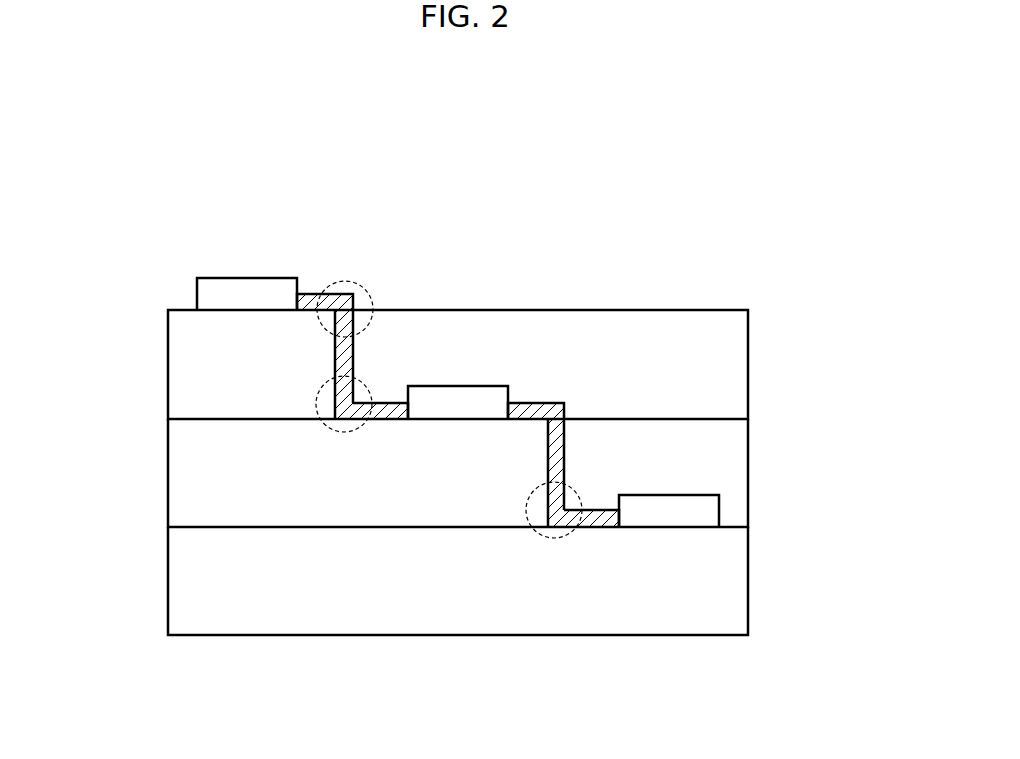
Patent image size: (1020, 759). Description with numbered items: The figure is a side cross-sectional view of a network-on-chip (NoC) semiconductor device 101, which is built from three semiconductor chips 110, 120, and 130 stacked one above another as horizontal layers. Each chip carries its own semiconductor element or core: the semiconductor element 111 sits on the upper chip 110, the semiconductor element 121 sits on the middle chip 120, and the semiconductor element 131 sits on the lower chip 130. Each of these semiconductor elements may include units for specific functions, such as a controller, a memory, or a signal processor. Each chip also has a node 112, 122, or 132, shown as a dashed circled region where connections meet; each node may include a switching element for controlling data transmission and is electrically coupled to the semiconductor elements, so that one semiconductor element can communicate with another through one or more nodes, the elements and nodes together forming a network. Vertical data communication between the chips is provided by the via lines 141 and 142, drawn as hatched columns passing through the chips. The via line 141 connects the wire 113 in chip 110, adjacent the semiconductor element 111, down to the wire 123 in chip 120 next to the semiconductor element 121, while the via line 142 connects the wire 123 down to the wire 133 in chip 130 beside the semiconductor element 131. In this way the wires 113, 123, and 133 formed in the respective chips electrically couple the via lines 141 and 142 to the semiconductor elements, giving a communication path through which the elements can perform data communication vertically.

The NoC semiconductor device 101 is at (757, 168).
The semiconductor chip 110 is at (748, 363).
The semiconductor chip 120 is at (748, 472).
The semiconductor chip 130 is at (748, 577).
The semiconductor element 111 is at (245, 295).
The node 112 is at (317, 327).
The wire 113 is at (303, 297).
The semiconductor element 121 is at (458, 400).
The node 122 is at (327, 425).
The wire 123 is at (528, 403).
The semiconductor element 131 is at (657, 513).
The node 132 is at (553, 538).
The wire 133 is at (598, 510).
The via line 141 is at (345, 355).
The via line 142 is at (564, 438).